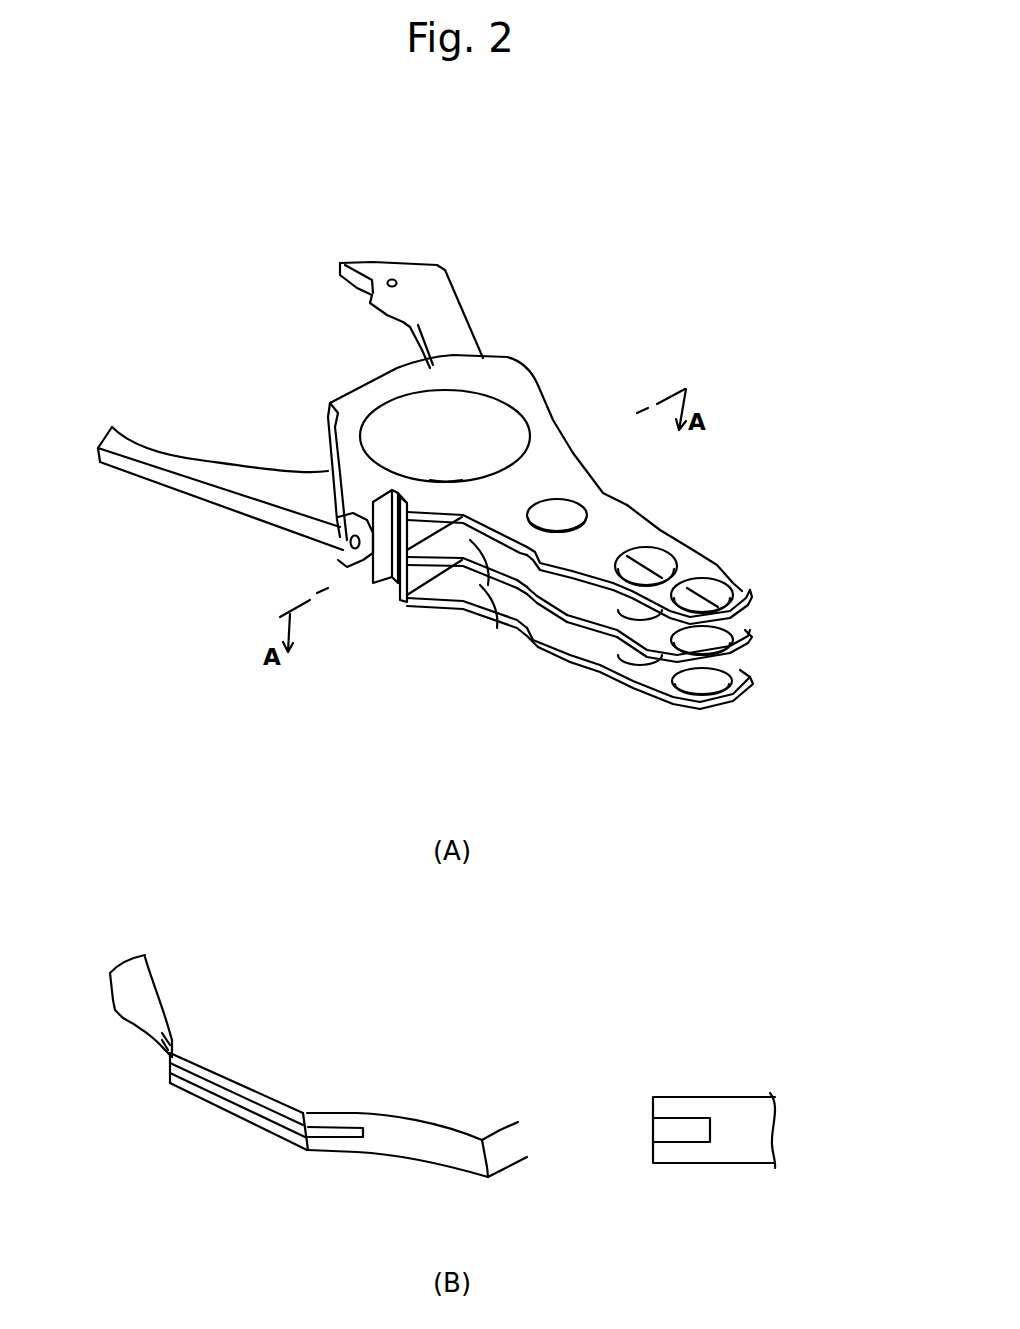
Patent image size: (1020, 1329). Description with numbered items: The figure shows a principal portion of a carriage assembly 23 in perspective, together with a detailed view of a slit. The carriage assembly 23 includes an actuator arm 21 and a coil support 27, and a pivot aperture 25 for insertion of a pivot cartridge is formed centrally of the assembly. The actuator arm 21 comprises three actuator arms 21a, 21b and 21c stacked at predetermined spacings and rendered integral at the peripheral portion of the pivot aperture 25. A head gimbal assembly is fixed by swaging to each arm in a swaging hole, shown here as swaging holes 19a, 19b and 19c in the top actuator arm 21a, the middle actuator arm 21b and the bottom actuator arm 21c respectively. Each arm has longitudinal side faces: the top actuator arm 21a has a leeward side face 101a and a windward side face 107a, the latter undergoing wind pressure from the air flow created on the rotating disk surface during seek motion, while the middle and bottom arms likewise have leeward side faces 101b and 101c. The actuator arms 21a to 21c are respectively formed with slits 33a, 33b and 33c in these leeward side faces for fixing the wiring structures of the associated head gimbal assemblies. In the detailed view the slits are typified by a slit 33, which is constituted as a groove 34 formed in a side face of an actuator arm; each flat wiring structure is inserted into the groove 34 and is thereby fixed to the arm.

The swaging hole 19a is at (715, 592).
The swaging hole 19b is at (700, 640).
The swaging hole 19c is at (711, 684).
The actuator arm 21 is at (592, 413).
The top actuator arm 21a is at (752, 596).
The middle actuator arm 21b is at (752, 637).
The bottom actuator arm 21c is at (752, 677).
The carriage assembly 23 is at (548, 385).
The pivot aperture 25 is at (460, 433).
The coil support 27 is at (197, 460).
The slit 33 is at (233, 1060).
The slit 33a is at (520, 590).
The slit 33b is at (593, 667).
The slit 33c is at (547, 660).
The groove 34 is at (272, 1120).
The leeward side face 101a is at (402, 595).
The leeward side face 101b is at (470, 608).
The leeward side face 101c is at (493, 620).
The windward side face 107a is at (603, 490).